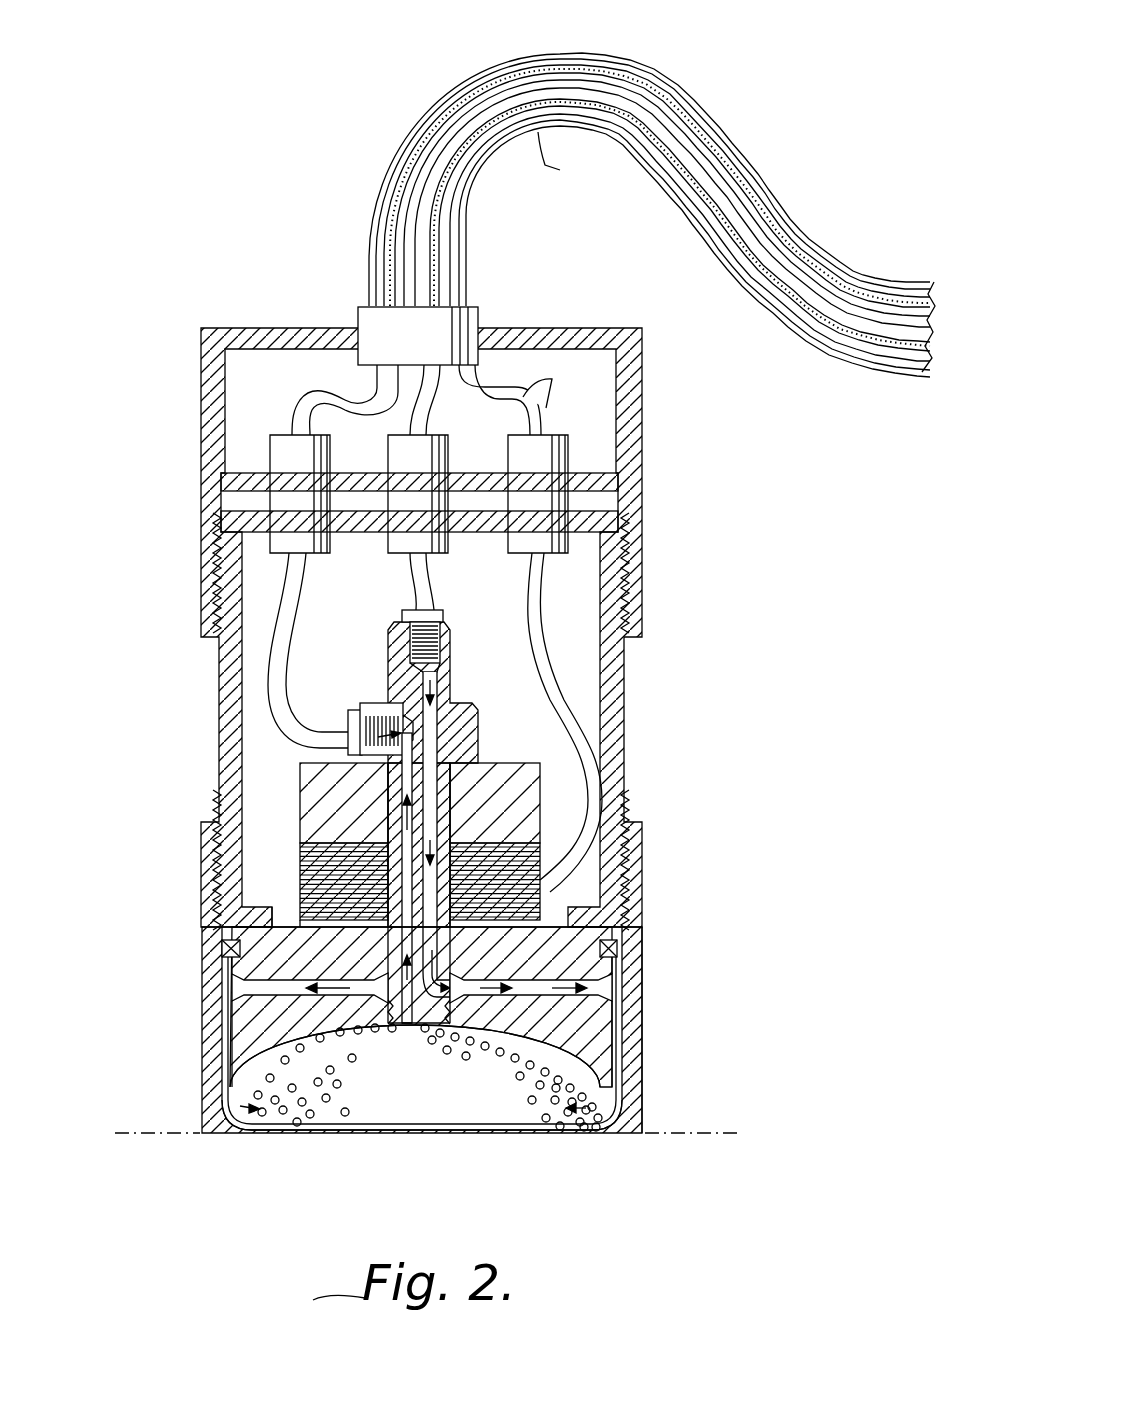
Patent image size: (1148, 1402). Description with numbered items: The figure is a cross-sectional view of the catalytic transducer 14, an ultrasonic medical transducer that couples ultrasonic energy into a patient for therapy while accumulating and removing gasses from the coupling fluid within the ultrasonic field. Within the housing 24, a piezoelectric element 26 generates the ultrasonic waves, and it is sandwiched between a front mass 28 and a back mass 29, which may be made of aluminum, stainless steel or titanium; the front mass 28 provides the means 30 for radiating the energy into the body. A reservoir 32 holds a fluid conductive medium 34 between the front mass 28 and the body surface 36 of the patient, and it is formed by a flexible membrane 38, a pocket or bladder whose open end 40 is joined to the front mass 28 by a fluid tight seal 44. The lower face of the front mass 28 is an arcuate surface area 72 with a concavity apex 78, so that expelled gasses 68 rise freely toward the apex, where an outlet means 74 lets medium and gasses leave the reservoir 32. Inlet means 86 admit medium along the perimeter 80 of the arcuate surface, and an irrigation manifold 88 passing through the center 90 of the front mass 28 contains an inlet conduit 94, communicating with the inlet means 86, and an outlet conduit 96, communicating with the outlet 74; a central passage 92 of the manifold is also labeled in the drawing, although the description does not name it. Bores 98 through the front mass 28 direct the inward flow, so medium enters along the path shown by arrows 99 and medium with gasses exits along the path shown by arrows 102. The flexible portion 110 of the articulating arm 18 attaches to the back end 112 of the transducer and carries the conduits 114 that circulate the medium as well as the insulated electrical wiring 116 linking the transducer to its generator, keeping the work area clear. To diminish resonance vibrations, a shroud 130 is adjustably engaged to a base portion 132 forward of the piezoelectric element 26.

The catalytic transducer 14 is at (157, 298).
The articulating arm 18 is at (780, 158).
The housing 24 is at (179, 646).
The piezoelectric element 26 is at (302, 857).
The front mass 28 is at (283, 915).
The back mass 29 is at (300, 780).
The means for radiating 30 is at (240, 1037).
The reservoir 32 is at (438, 1105).
The fluid conductive medium 34 is at (393, 1115).
The body surface 36 is at (675, 1130).
The flexible membrane 38 is at (240, 1130).
The open end 40 is at (236, 996).
The fluid tight seal 44 is at (222, 948).
The expelled gasses 68 is at (518, 1050).
The surface area 72 is at (527, 1050).
The outlet means 74 is at (406, 1027).
The concavity apex 78 is at (441, 1027).
The perimeter 80 is at (222, 1068).
The inlet means 86 is at (232, 984).
The irrigation manifold 88 is at (482, 724).
The center 90 is at (386, 1014).
The central tube 92 is at (437, 795).
The inlet conduit 94 is at (438, 645).
The outlet conduit 96 is at (370, 718).
The bores 98 is at (540, 983).
The arrows 99 is at (240, 1106).
The arrows 102 is at (405, 838).
The flexible portion 110 is at (468, 264).
The back end 112 is at (350, 292).
The conduits 114 is at (575, 70).
The insulated electrical wiring 116 is at (552, 379).
The shroud 130 is at (637, 1067).
The base portion 132 is at (622, 807).